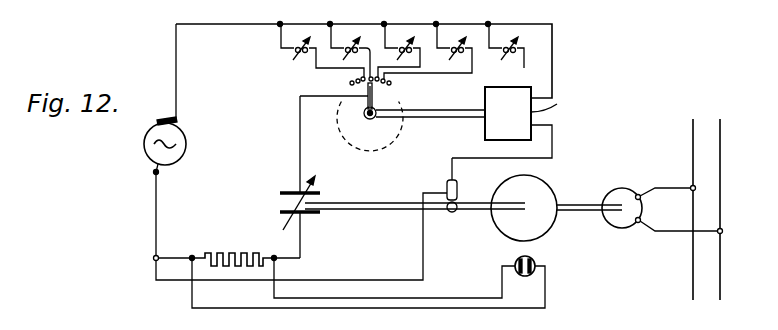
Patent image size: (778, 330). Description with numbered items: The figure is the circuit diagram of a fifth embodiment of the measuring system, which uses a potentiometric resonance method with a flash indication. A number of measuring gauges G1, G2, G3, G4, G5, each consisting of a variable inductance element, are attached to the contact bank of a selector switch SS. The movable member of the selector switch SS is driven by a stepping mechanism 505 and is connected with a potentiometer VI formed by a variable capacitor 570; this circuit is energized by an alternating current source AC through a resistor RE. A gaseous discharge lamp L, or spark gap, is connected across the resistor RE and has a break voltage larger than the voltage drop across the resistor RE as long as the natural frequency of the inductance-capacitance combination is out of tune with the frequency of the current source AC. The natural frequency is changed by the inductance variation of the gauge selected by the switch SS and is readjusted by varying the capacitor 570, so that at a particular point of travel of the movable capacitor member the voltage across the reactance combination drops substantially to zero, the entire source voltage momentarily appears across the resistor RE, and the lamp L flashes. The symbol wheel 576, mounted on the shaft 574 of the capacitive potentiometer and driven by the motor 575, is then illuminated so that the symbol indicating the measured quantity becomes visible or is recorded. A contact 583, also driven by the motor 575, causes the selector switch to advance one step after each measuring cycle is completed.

The stepping mechanism 505 is at (485, 129).
The variable capacitor 570 is at (290, 206).
The shaft 574 is at (563, 212).
The motor 575 is at (624, 191).
The symbol wheel 576 is at (550, 187).
The contact 583 is at (459, 196).
The alternating current source AC is at (214, 154).
The resistor RE is at (240, 251).
The variable impedance device VI is at (340, 243).
The selector switch SS is at (380, 145).
The gaseous discharge lamp L is at (536, 261).
The measuring gauge G1 is at (321, 50).
The measuring gauge G2 is at (349, 50).
The measuring gauge G3 is at (399, 50).
The measuring gauge G4 is at (428, 51).
The measuring gauge G5 is at (505, 45).